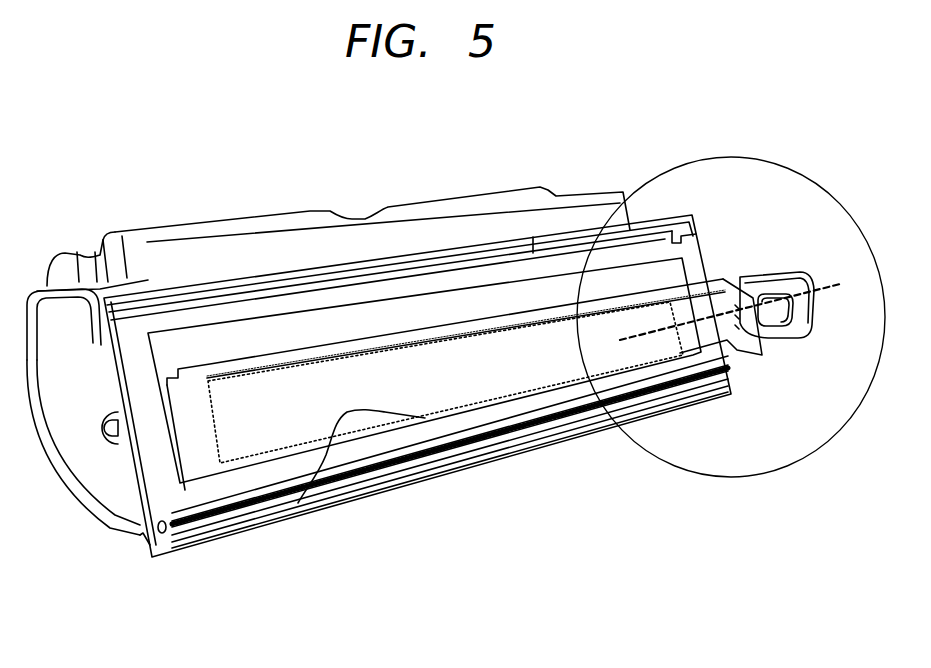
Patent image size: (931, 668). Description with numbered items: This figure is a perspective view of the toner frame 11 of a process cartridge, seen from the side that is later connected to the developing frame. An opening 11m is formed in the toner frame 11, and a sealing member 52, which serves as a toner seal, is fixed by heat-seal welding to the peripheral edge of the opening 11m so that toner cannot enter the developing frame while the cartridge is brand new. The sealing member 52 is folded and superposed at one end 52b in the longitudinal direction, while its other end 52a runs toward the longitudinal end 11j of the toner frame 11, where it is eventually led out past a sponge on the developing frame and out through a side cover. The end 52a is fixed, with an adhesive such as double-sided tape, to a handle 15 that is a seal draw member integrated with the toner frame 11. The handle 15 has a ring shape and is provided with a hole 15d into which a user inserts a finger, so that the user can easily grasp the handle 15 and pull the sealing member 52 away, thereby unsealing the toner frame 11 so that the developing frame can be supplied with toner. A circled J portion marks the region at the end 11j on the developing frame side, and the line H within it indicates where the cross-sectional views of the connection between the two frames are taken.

The toner frame 11 is at (294, 213).
The end of the toner frame in the longitudinal direction 11j is at (693, 267).
The opening of the toner frame 11m is at (298, 503).
The sealing member 52 is at (507, 385).
The other end of the sealing member in the longitudinal direction 52a is at (743, 356).
The one end of the sealing member in the longitudinal direction 52b is at (213, 453).
The handle 15 is at (813, 313).
The hole 15d is at (783, 292).
The J portion J is at (647, 182).
The line H- H is at (633, 283).